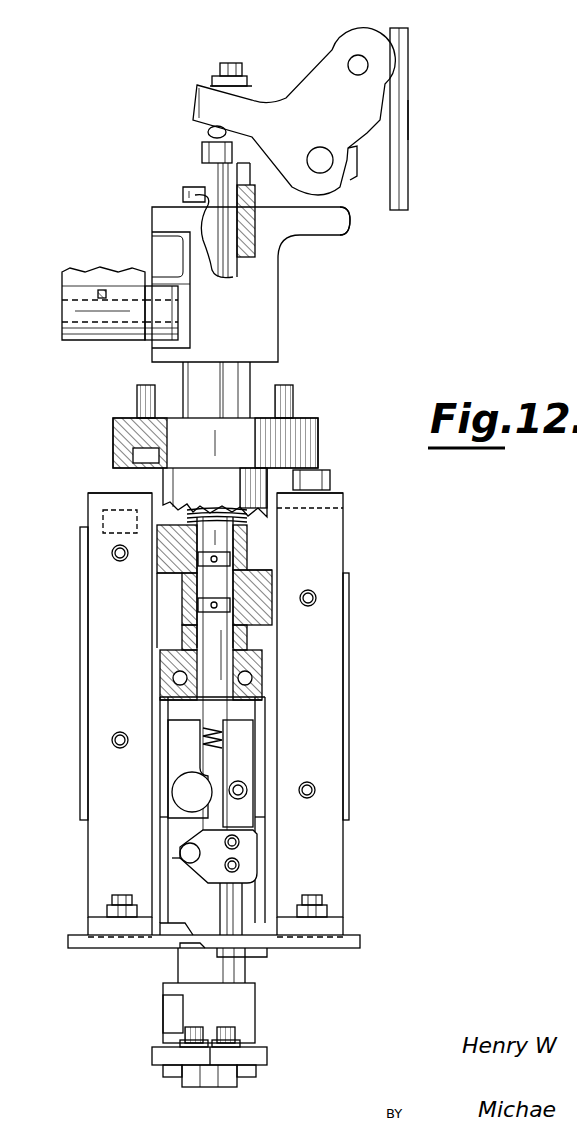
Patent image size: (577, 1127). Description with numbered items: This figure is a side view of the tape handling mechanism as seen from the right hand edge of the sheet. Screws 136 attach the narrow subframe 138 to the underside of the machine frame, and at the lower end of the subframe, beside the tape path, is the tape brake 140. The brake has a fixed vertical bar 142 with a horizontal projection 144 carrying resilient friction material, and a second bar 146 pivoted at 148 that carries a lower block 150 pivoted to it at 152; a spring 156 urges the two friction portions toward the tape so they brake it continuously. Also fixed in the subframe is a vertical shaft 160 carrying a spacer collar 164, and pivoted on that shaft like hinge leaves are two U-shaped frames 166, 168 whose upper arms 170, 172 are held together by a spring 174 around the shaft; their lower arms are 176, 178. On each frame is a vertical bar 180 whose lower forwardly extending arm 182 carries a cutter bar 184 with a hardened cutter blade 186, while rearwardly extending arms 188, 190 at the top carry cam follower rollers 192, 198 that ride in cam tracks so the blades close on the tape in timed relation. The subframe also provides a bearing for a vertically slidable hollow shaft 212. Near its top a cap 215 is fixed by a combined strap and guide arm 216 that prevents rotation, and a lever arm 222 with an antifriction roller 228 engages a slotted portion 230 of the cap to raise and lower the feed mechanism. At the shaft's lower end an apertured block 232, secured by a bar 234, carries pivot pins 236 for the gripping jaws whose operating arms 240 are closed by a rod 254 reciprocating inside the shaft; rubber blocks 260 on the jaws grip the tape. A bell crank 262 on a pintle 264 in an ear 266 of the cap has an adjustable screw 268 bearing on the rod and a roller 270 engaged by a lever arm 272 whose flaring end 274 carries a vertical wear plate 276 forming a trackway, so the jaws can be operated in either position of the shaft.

The screws 136 is at (135, 390).
The subframe 138 is at (312, 420).
The tape brake 140 is at (262, 850).
The fixed vertical bar 142 is at (243, 773).
The horizontal projection 144 is at (217, 885).
The second bar 146 is at (178, 761).
The pivot 148 is at (178, 791).
The lower block 150 is at (178, 857).
The pivot 152 is at (181, 848).
The spring 156 is at (210, 726).
The vertical shaft 160 is at (262, 662).
The spacer collar 164 is at (262, 637).
The U-shaped frame 166 is at (350, 596).
The U-shaped frame 168 is at (80, 560).
The upper arm 170 is at (262, 566).
The upper arm 172 is at (160, 577).
The spring 174 is at (206, 508).
The lower arm 176 is at (267, 757).
The lower arm 178 is at (160, 727).
The vertical bar 180 is at (88, 634).
The forwardly extending arm 182 is at (345, 934).
The cutter bar 184 is at (255, 950).
The cutter blade 186 is at (210, 948).
The rearwardly extending arm 188 is at (100, 483).
The rearwardly extending arm 190 is at (340, 485).
The cam follower roller 192 is at (108, 516).
The cam follower roller 198 is at (328, 468).
The hollow shaft 212 is at (220, 372).
The cap 215 is at (280, 284).
The combined strap and guide arm 216 is at (160, 238).
The lever arm 222 is at (58, 272).
The antifriction roller 228 is at (155, 292).
The slotted portion 230 is at (188, 300).
The apertured block 232 is at (256, 998).
The bar 234 is at (168, 1010).
The pivot pins 236 is at (226, 1028).
The operating arms 240 is at (152, 1056).
The rod 254 is at (192, 185).
The rubber blocks 260 is at (216, 1090).
The bell crank 262 is at (288, 98).
The pintle 264 is at (322, 150).
The ear 266 is at (350, 233).
The adjustable screw 268 is at (206, 128).
The roller 270 is at (345, 38).
The lever arm 272 is at (412, 128).
The flaring end 274 is at (408, 63).
The vertical wear plate 276 is at (368, 195).